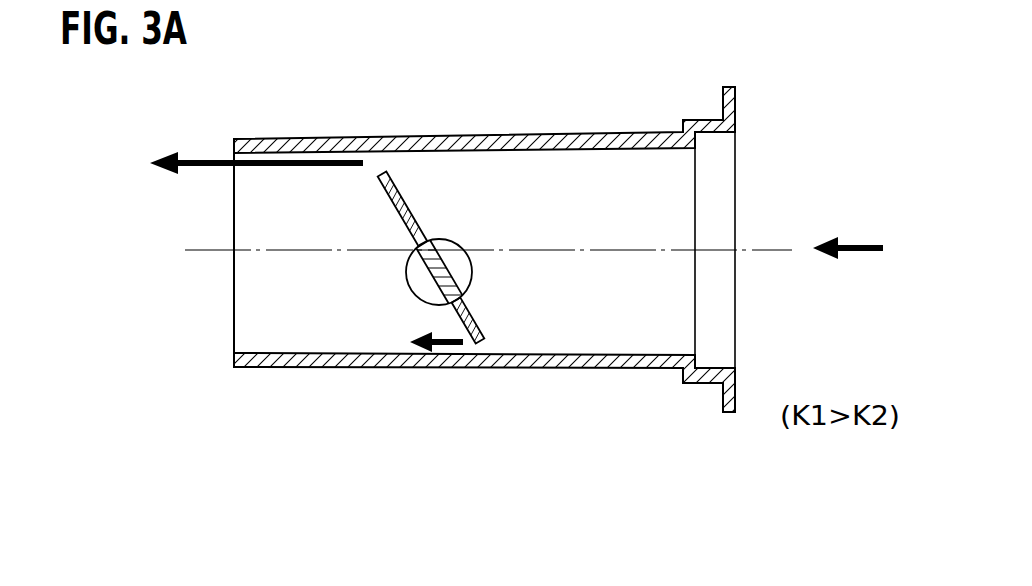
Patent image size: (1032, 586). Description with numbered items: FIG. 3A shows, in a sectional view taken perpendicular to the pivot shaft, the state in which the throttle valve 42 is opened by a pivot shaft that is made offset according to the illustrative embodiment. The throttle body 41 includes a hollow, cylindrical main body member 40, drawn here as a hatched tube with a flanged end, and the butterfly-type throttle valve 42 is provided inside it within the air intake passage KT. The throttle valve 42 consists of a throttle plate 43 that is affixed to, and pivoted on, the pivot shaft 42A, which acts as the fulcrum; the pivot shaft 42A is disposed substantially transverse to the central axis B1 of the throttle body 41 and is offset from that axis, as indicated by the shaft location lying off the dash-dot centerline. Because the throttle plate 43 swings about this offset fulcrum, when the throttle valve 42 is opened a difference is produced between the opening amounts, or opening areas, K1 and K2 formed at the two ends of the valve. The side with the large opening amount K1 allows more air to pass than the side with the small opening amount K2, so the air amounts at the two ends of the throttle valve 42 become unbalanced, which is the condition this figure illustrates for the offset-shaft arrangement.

The main body member 40 is at (595, 368).
The throttle body 41 is at (647, 133).
The throttle valve 42 is at (443, 227).
The pivot shaft 42A is at (417, 293).
The throttle plate 43 is at (387, 197).
The opening amount K1 is at (374, 168).
The opening amount K2 is at (485, 343).
The air intake passage KT is at (650, 240).
The central axis B1 is at (742, 250).